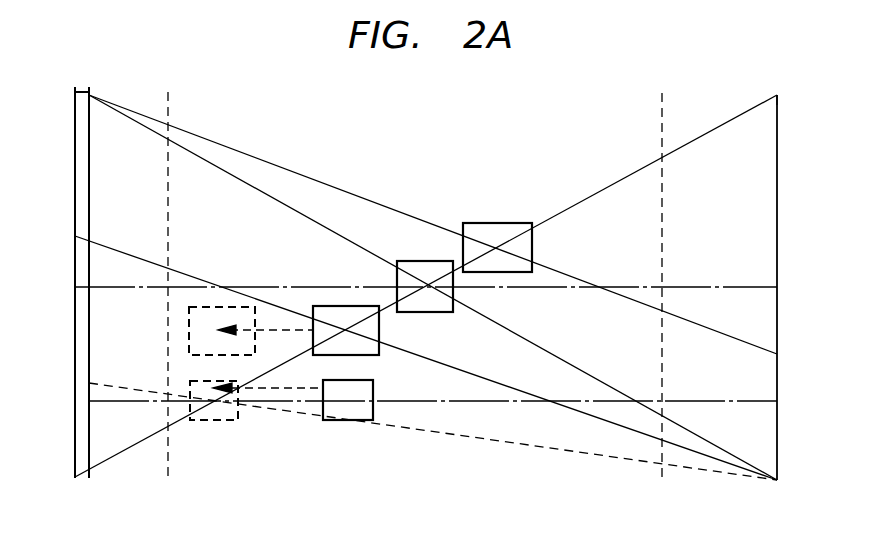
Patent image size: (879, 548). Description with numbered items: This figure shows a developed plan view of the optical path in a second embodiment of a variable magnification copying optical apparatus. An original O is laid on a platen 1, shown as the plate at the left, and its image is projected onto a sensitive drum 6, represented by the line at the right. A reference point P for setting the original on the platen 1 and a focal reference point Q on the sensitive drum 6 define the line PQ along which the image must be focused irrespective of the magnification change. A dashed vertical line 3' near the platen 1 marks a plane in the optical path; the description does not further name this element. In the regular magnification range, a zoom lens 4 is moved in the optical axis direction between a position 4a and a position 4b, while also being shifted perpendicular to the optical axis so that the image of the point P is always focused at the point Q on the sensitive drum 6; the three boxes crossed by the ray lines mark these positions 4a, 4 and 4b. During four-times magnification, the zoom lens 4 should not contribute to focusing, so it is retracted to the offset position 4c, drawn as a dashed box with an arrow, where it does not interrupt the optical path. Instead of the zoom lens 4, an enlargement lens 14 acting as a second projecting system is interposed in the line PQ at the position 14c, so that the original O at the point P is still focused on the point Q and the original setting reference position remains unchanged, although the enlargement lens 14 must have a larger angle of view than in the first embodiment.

The platen 1 is at (89, 90).
The original O is at (75, 170).
The standard point for laying the original P is at (75, 478).
The focusing standard position Q is at (777, 95).
The sensitive drum 6 is at (777, 258).
The first lens plane 3' is at (188, 271).
The zoom lens 4 is at (423, 261).
The position of the zoom lens 4a is at (328, 306).
The position of the zoom lens 4b is at (500, 223).
The retracted position of the zoom lens 4c is at (215, 307).
The enlargement lens 14 is at (348, 420).
The position of the enlargement lens 14c is at (218, 420).